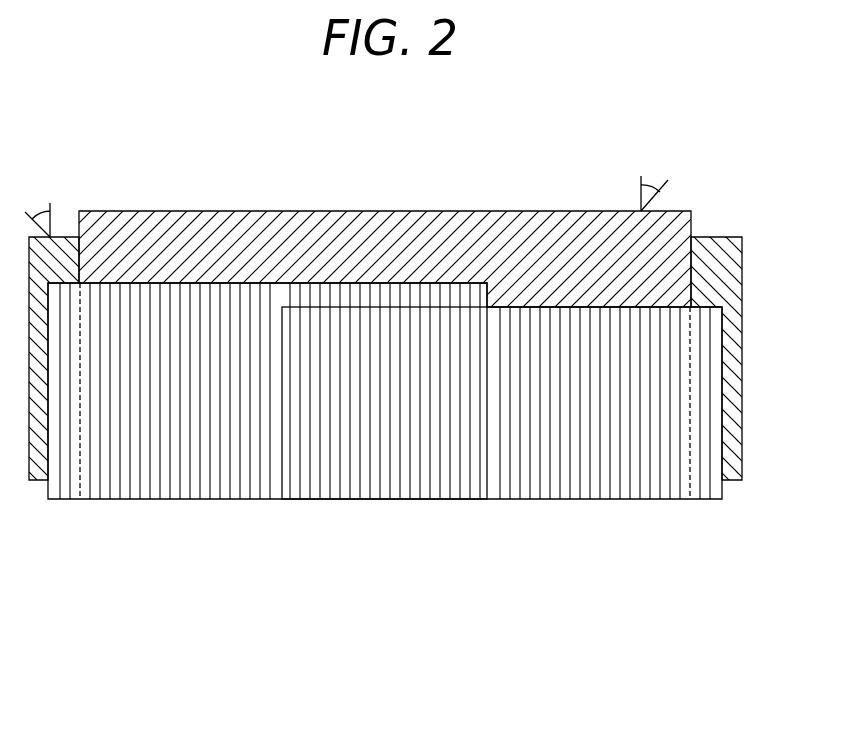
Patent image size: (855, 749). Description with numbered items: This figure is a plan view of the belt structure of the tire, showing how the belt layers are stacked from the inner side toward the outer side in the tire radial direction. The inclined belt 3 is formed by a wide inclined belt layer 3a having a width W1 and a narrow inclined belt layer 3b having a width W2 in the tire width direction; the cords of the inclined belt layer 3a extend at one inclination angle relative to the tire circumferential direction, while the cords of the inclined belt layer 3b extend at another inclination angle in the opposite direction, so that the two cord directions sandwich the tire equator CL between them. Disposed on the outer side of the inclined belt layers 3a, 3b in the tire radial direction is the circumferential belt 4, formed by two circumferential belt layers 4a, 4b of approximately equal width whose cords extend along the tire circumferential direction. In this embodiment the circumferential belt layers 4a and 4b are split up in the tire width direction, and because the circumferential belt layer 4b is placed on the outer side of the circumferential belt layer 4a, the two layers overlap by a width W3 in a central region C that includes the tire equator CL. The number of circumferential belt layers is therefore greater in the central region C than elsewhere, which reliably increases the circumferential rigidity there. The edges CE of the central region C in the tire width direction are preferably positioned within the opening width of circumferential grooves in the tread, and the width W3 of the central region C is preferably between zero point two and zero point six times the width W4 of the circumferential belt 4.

The inclined belt 3 is at (417, 355).
The wide inclined belt layer 3a is at (805, 204).
The narrow inclined belt layer 3b is at (667, 227).
The circumferential belt 4 is at (385, 440).
The circumferential belt layer 4a is at (143, 482).
The circumferential belt layer 4b is at (330, 483).
The central region C is at (489, 211).
The tire equator CL is at (385, 520).
The edges of the central region CE is at (282, 343).
The width of wide inclined belt layer W1 is at (29, 480).
The width of narrow inclined belt layer W2 is at (80, 499).
The width of central region W3 is at (282, 307).
The width of circumferential belt W4 is at (48, 499).